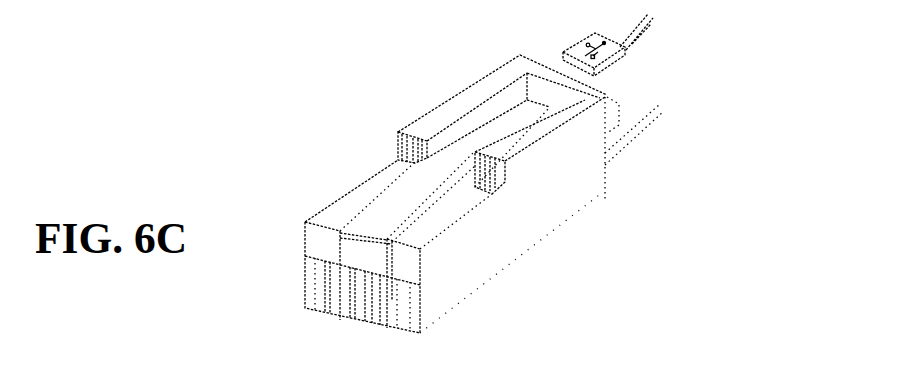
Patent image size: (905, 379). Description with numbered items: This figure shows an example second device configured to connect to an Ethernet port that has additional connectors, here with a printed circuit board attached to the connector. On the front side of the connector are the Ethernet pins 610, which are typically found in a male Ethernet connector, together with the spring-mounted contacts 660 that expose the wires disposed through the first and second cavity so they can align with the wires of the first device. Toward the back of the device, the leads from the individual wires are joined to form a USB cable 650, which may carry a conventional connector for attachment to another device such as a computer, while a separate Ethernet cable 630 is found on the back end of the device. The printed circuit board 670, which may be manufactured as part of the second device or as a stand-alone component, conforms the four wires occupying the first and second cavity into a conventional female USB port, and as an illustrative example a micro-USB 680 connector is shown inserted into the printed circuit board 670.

The Ethernet pins 610 is at (409, 322).
The Ethernet cable 630 is at (660, 161).
The USB cable 650 is at (654, 25).
The spring-mounted contacts 660 is at (516, 188).
The printed circuit board 670 is at (622, 93).
The micro-USB connector 680 is at (635, 59).